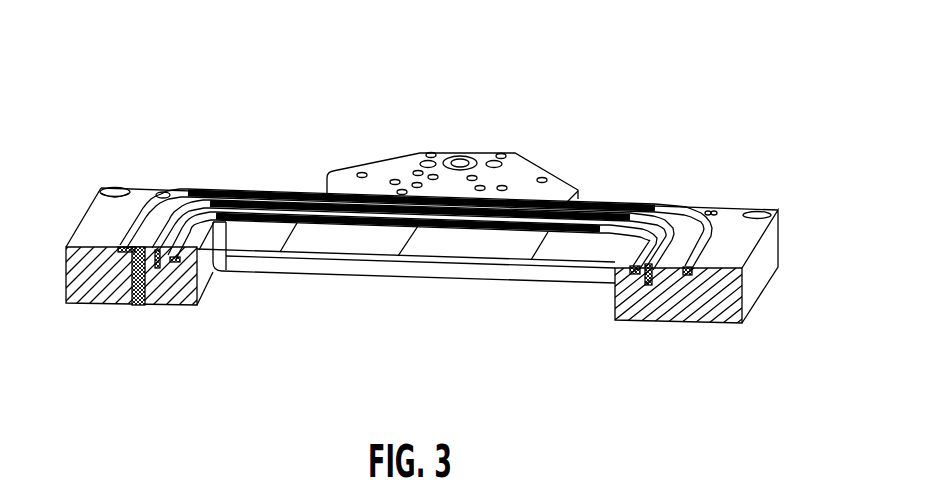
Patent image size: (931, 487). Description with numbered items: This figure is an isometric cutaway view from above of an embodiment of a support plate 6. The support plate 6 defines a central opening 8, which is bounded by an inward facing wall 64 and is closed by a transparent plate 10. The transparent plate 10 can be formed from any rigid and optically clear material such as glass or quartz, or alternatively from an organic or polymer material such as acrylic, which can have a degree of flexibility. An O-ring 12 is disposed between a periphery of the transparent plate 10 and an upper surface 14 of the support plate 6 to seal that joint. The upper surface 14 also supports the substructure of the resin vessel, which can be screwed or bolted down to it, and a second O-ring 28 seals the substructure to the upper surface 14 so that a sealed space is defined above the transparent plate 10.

The support plate 6 is at (446, 110).
The central opening 8 is at (408, 252).
The transparent plate 10 is at (332, 255).
The O-ring 12 is at (183, 232).
The upper surface 14 is at (130, 194).
The O-ring 28 is at (123, 190).
The inward facing wall 64 is at (200, 272).